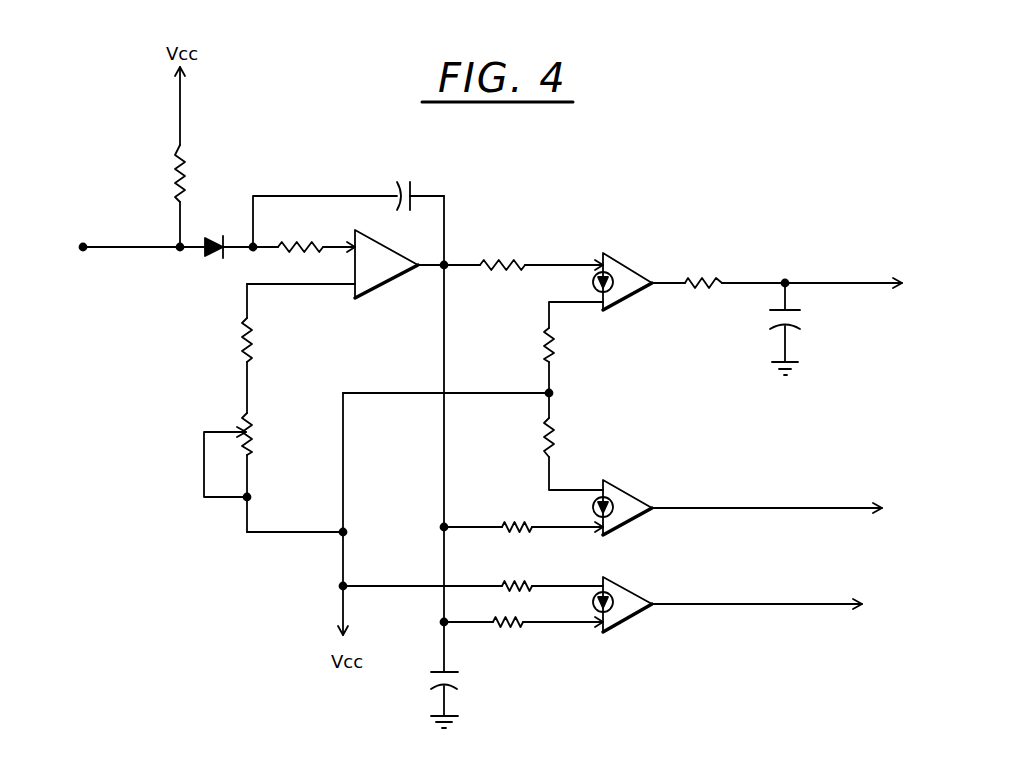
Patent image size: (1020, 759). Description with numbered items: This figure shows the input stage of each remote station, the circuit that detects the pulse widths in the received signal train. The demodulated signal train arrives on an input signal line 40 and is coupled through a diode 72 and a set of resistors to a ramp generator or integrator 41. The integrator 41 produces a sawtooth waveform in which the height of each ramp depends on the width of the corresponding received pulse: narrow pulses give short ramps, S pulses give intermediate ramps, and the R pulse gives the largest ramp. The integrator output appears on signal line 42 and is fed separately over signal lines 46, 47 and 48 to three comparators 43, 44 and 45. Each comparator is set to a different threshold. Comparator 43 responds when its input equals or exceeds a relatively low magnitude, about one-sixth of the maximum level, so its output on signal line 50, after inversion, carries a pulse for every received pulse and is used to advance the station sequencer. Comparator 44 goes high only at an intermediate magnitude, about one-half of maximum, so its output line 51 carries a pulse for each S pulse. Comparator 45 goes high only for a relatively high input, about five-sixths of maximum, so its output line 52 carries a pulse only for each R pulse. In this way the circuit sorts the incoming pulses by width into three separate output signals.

The input signal line 40 is at (147, 250).
The diode 72 is at (207, 257).
The integrator 41 is at (372, 294).
The signal line 42 is at (458, 267).
The signal line 46 is at (556, 264).
The comparator 43 is at (628, 264).
The signal line 50 is at (815, 282).
The signal line 47 is at (585, 528).
The comparator 44 is at (630, 493).
The output line 51 is at (753, 508).
The signal line 48 is at (570, 625).
The comparator 45 is at (642, 613).
The output line 52 is at (805, 604).